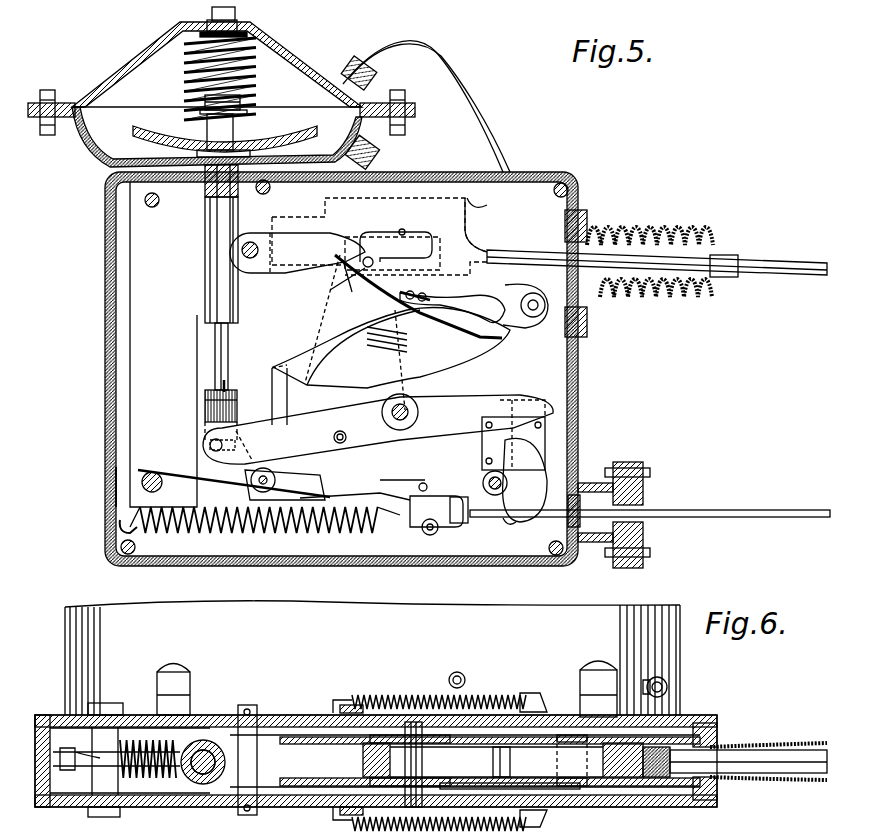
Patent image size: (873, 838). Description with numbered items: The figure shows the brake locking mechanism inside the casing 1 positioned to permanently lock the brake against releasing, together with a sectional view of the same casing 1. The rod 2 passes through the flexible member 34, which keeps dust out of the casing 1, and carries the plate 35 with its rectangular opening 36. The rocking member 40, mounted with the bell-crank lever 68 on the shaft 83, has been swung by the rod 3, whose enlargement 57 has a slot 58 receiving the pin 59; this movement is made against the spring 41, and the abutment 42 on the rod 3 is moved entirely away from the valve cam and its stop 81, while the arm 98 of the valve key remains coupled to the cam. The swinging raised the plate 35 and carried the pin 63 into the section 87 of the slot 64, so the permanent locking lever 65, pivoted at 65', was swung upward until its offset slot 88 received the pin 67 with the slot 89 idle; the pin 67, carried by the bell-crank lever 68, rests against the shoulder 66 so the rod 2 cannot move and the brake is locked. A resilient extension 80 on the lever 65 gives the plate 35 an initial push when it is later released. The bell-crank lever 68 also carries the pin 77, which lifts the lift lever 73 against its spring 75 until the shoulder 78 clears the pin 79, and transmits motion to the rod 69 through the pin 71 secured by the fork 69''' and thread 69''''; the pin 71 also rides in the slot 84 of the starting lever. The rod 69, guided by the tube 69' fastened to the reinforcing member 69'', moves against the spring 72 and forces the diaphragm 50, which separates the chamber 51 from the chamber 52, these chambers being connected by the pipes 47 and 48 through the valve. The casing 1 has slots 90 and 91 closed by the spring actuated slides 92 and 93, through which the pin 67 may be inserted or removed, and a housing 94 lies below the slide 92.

In FIG. 5, the casing 1 is at (578, 378).
In FIG. 6, the casing 1 is at (288, 714).
In FIG. 5, the rod 2 is at (772, 262).
In FIG. 6, the rod 2 is at (806, 773).
In FIG. 5, the rod 3 is at (772, 510).
In FIG. 5, the flexible member 34 is at (660, 232).
In FIG. 6, the flexible member 34 is at (782, 745).
In FIG. 5, the plate 35 is at (488, 230).
In FIG. 6, the plate 35 is at (658, 775).
In FIG. 6, the rectangular opening 36 is at (598, 755).
In FIG. 5, the rocking member 40 is at (278, 380).
In FIG. 5, the spring 41 is at (290, 532).
In FIG. 6, the spring 41 is at (160, 775).
In FIG. 5, the abutment 42 is at (567, 522).
In FIG. 5, the pipe 47 is at (378, 165).
In FIG. 6, the pipe 47 is at (460, 672).
In FIG. 5, the pipe 48 is at (478, 128).
In FIG. 6, the pipe 48 is at (668, 687).
In FIG. 5, the diaphragm 50 is at (122, 138).
In FIG. 5, the chamber 51 is at (308, 75).
In FIG. 5, the chamber 52 is at (112, 152).
In FIG. 5, the enlargement 57 is at (458, 524).
In FIG. 5, the slot 58 is at (445, 500).
In FIG. 5, the pin 59 is at (424, 532).
In FIG. 5, the pin 63 is at (410, 300).
In FIG. 5, the slot 64 is at (480, 300).
In FIG. 5, the permanent locking lever 65 is at (379, 214).
In FIG. 6, the permanent locking lever 65 is at (572, 760).
In FIG. 5, the pivot 65' is at (297, 267).
In FIG. 6, the pivot 65' is at (253, 745).
In FIG. 5, the shoulder 66 is at (343, 258).
In FIG. 6, the shoulder 66 is at (505, 760).
In FIG. 5, the pin 67 is at (338, 282).
In FIG. 6, the pin 67 is at (417, 766).
In FIG. 5, the bell-crank lever 68 is at (380, 362).
In FIG. 6, the bell-crank lever 68 is at (370, 770).
In FIG. 5, the rod 69 is at (237, 356).
In FIG. 6, the rod 69 is at (203, 785).
In FIG. 5, the tube 69' is at (204, 244).
In FIG. 5, the reinforcing member 69'' is at (178, 360).
In FIG. 5, the fork 69''' is at (197, 415).
In FIG. 5, the thread 69'''' is at (189, 390).
In FIG. 5, the pin 71 is at (208, 445).
In FIG. 5, the spring 72 is at (184, 72).
In FIG. 5, the lift lever 73 is at (455, 462).
In FIG. 5, the spring 75 is at (205, 482).
In FIG. 6, the spring 75 is at (128, 730).
In FIG. 5, the pin 77 is at (334, 438).
In FIG. 5, the shoulder 78 is at (383, 488).
In FIG. 5, the pin 79 is at (423, 483).
In FIG. 5, the resilient extension 80 is at (488, 203).
In FIG. 5, the stop 81 is at (537, 492).
In FIG. 5, the shaft 83 is at (410, 412).
In FIG. 5, the slot 84 is at (245, 442).
In FIG. 5, the slot section 87 is at (412, 300).
In FIG. 5, the offset slot 88 is at (384, 258).
In FIG. 5, the slot 89 is at (402, 229).
In FIG. 6, the slot 90 is at (480, 700).
In FIG. 6, the slot 91 is at (462, 792).
In FIG. 6, the spring actuated slide 92 is at (333, 710).
In FIG. 6, the spring actuated slide 93 is at (333, 815).
In FIG. 6, the housing 94 is at (165, 610).
In FIG. 5, the arm 98 is at (505, 524).